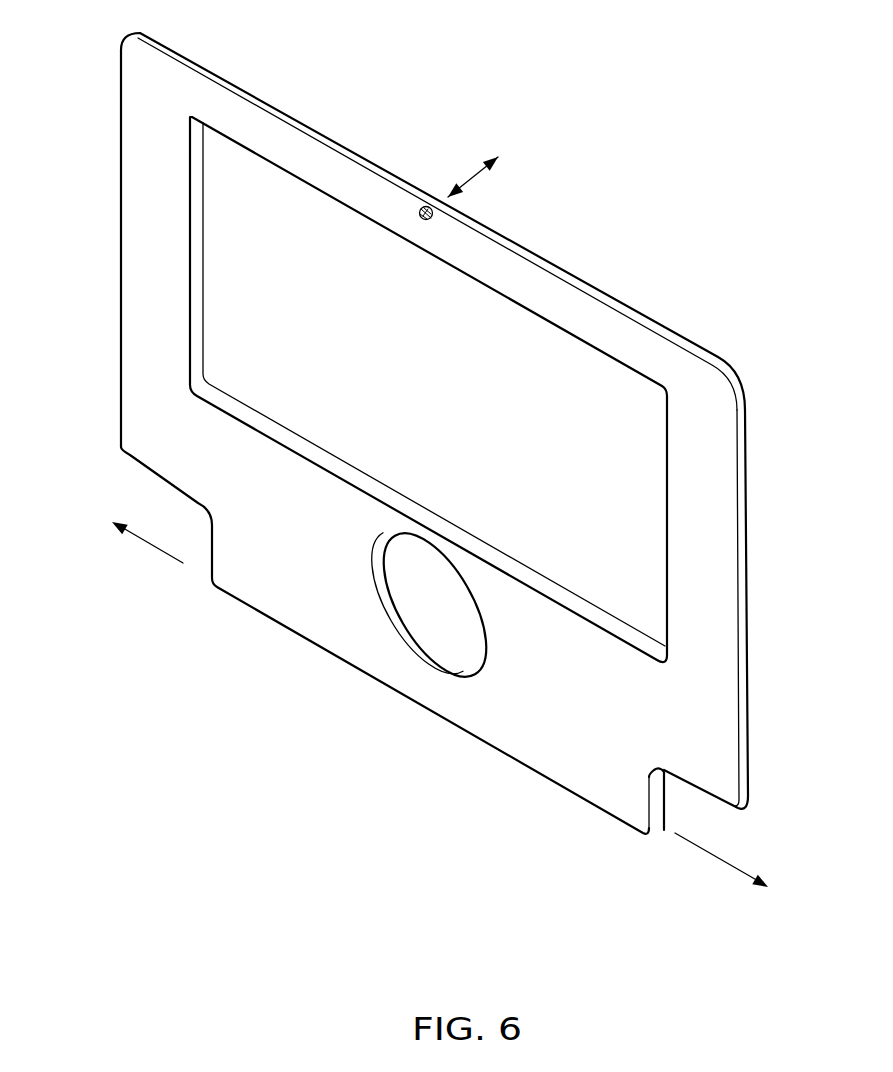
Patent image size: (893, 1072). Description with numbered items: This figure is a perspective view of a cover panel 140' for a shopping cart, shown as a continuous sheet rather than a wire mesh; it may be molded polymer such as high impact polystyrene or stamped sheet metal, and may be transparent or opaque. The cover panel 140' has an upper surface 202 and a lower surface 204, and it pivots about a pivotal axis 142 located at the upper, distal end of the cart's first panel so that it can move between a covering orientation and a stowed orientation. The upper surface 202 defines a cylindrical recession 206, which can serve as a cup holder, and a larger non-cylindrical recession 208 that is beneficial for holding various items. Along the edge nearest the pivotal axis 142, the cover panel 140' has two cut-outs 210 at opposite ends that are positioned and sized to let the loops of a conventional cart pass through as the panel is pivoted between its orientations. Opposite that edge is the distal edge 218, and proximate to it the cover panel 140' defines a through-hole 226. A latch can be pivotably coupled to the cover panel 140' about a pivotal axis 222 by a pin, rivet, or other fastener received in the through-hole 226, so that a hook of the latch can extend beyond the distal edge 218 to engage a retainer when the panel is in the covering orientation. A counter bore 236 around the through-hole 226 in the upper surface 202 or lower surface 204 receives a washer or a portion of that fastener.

The cover panel 140' is at (455, 119).
The pivotal axis 142 is at (168, 560).
The upper surface 202 is at (288, 575).
The lower surface 204 is at (434, 433).
The cylindrical recession 206 is at (420, 625).
The non-cylindrical recession 208 is at (292, 188).
The cut-out 210 is at (173, 513).
The distal edge 218 is at (533, 258).
The pivotal axis 222 is at (477, 177).
The through-hole 226 is at (423, 208).
The counter bore 236 is at (423, 222).